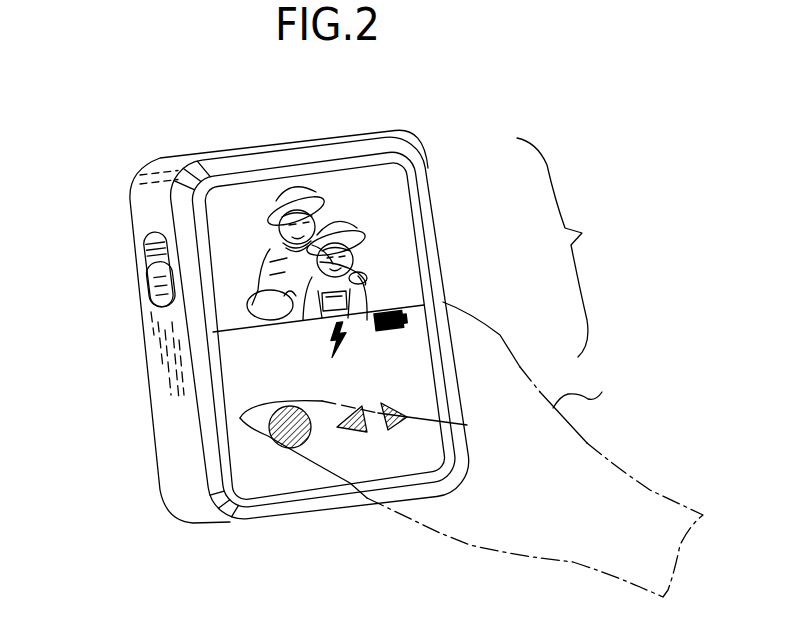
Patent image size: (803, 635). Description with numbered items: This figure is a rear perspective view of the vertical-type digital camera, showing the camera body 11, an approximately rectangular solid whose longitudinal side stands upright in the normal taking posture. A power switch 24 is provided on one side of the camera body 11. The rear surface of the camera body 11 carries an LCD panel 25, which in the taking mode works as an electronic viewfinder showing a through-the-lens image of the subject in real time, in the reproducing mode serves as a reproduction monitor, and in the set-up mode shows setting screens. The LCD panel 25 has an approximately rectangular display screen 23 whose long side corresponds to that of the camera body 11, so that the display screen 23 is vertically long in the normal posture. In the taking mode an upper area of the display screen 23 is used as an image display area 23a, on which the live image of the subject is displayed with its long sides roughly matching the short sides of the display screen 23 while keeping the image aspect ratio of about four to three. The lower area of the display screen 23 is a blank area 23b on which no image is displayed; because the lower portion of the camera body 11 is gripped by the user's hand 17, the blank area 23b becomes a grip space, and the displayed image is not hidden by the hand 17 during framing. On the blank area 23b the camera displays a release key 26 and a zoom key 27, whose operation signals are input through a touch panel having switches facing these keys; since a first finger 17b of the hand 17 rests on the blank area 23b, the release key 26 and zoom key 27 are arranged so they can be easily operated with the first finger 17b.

The camera body 11 is at (201, 156).
The user's hand 17 is at (602, 392).
The first finger 17b is at (240, 418).
The display screen 23 is at (571, 247).
The image display area 23a is at (393, 223).
The blank area 23b is at (413, 398).
The power switch 24 is at (147, 284).
The LCD panel 25 is at (377, 190).
The release key 26 is at (290, 446).
The zoom key 27 is at (400, 435).